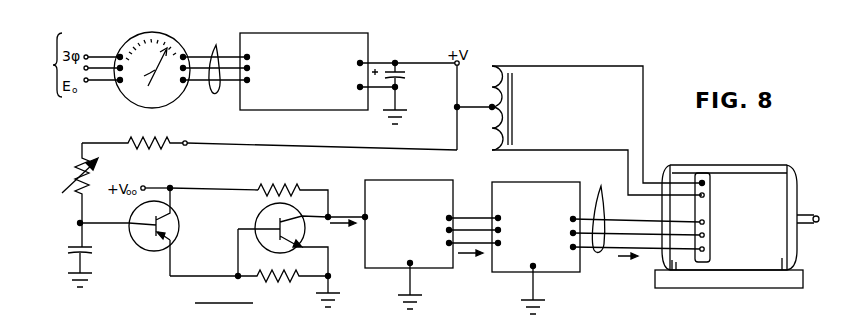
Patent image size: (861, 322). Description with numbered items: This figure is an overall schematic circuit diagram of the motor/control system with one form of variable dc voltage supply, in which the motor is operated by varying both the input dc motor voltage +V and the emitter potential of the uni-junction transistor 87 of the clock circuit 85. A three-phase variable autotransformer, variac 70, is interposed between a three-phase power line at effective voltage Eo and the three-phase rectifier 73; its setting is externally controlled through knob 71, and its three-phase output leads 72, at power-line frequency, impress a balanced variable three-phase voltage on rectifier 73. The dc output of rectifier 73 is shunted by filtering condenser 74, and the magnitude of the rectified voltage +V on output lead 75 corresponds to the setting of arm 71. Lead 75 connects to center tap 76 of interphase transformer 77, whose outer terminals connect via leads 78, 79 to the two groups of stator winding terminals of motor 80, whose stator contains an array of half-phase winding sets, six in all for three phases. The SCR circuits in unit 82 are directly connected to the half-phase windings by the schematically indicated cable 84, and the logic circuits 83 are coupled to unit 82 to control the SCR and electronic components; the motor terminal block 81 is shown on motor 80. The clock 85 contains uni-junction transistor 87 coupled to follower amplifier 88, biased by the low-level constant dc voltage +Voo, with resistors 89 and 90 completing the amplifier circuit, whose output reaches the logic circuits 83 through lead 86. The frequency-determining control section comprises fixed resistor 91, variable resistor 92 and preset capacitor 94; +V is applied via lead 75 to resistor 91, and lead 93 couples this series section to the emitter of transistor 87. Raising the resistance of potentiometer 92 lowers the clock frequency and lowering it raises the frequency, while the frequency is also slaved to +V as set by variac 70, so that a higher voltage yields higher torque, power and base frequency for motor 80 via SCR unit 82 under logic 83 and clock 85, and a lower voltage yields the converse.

The variac 70 is at (176, 42).
The knob 71 is at (157, 72).
The three-phase output leads 72 is at (216, 60).
The three-phase rectifier 73 is at (368, 37).
The filtering condenser 74 is at (400, 78).
The output lead 75 is at (322, 147).
The center tap 76 is at (486, 118).
The interphase transformer 77 is at (514, 113).
The lead 78 is at (559, 151).
The lead 79 is at (643, 99).
The motor 80 is at (753, 237).
The motor terminal block 81 is at (711, 200).
The SCR unit 82 is at (581, 265).
The logic circuits 83 is at (440, 270).
The cable 84 is at (636, 214).
The clock circuit 85 is at (215, 262).
The lead 86 is at (343, 212).
The uni-junction transistor 87 is at (178, 221).
The follower amplifier 88 is at (262, 219).
The resistor 89 is at (278, 186).
The resistor 90 is at (284, 275).
The fixed resistor 91 is at (145, 148).
The variable resistor 92 is at (74, 172).
The lead 93 is at (115, 226).
The preset capacitor 94 is at (71, 247).